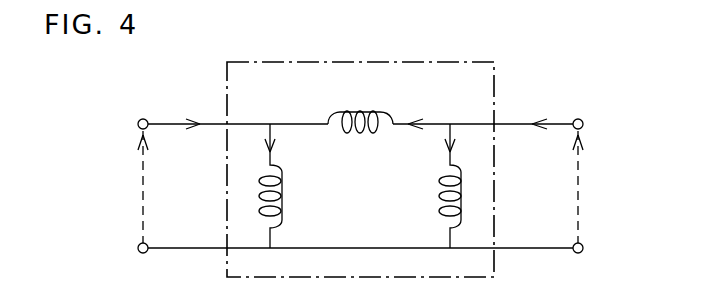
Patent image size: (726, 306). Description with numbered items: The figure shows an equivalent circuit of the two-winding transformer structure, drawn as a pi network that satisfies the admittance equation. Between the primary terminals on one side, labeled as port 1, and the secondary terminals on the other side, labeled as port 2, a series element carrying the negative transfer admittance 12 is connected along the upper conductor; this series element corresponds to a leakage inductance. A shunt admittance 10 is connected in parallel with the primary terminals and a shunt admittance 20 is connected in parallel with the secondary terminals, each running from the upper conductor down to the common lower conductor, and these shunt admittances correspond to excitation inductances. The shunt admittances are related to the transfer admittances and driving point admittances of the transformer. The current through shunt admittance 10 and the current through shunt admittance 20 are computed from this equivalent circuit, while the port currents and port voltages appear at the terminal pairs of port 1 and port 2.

The port 1 (input terminal pair, current i1, voltage v1) 1 is at (569, 174).
The port 2 (output terminal pair, current i2, voltage v2) 2 is at (156, 174).
The series admittance -y12 (transfer admittance element) 12 is at (384, 110).
The shunt admittance y'20 at port 2 20 is at (291, 186).
The shunt admittance y'10 at port 1 10 is at (434, 186).